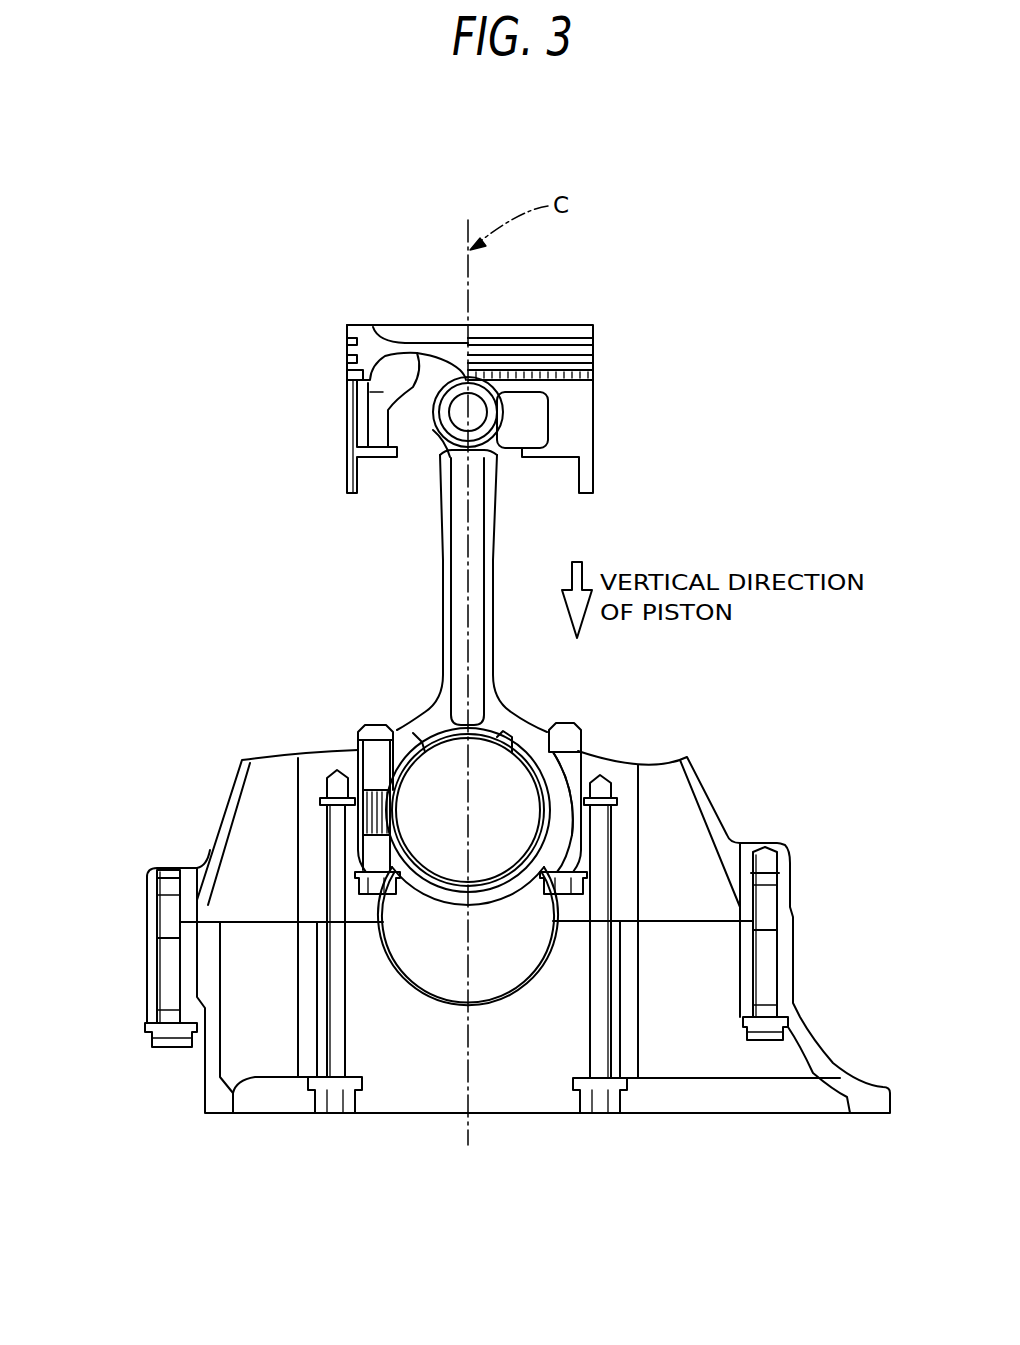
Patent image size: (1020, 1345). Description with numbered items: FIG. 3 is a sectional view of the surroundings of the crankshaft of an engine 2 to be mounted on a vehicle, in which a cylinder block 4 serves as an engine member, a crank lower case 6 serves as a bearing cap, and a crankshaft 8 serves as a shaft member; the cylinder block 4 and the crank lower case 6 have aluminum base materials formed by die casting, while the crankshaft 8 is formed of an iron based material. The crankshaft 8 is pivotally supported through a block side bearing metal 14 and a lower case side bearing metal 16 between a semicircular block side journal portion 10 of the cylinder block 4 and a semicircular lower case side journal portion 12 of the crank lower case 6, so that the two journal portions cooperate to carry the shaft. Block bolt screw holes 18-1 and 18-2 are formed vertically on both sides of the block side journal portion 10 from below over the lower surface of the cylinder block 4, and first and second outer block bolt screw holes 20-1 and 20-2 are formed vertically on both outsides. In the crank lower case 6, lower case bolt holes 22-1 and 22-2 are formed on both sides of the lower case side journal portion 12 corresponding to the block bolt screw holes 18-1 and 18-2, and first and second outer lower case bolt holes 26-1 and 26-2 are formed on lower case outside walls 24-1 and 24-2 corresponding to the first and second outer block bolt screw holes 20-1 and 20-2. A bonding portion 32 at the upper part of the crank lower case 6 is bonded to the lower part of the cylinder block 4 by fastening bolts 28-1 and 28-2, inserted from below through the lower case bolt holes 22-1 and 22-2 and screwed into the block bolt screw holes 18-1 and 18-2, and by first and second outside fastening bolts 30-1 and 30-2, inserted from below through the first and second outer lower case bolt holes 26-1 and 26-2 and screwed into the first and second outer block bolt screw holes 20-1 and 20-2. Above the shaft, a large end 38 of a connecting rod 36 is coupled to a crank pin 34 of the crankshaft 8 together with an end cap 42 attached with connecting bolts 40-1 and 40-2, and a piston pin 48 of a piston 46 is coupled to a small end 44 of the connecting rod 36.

The engine 2 is at (713, 238).
The cylinder block 4 is at (712, 808).
The crank lower case 6 is at (812, 1011).
The crankshaft 8 is at (487, 975).
The block side journal portion 10 is at (367, 900).
The lower case side journal portion 12 is at (368, 945).
The block side bearing metal 14 is at (357, 917).
The lower case side bearing metal 16 is at (433, 1005).
The block bolt screw hole 18-1 is at (323, 826).
The block bolt screw hole 18-2 is at (608, 826).
The first outer block bolt screw hole 20-1 is at (165, 903).
The second outer block bolt screw hole 20-2 is at (776, 905).
The lower case bolt hole 22-1 is at (330, 1007).
The lower case bolt hole 22-2 is at (608, 1020).
The lower case outside wall 24-1 is at (148, 950).
The lower case outside wall 24-2 is at (784, 943).
The first outer lower case bolt hole 26-1 is at (165, 988).
The second outer lower case bolt hole 26-2 is at (772, 985).
The fastening bolt 28-1 is at (335, 1118).
The fastening bolt 28-2 is at (600, 1118).
The first outside fastening bolt 30-1 is at (153, 1037).
The second outside fastening bolt 30-2 is at (770, 1042).
The bonding portion 32 is at (683, 938).
The crank pin 34 is at (435, 780).
The connecting rod 36 is at (497, 547).
The large end 38 is at (547, 743).
The connecting bolt 40-1 is at (357, 872).
The connecting bolt 40-2 is at (587, 880).
The end cap 42 is at (507, 880).
The small end 44 is at (507, 417).
The piston 46 is at (577, 397).
The piston pin 48 is at (440, 453).